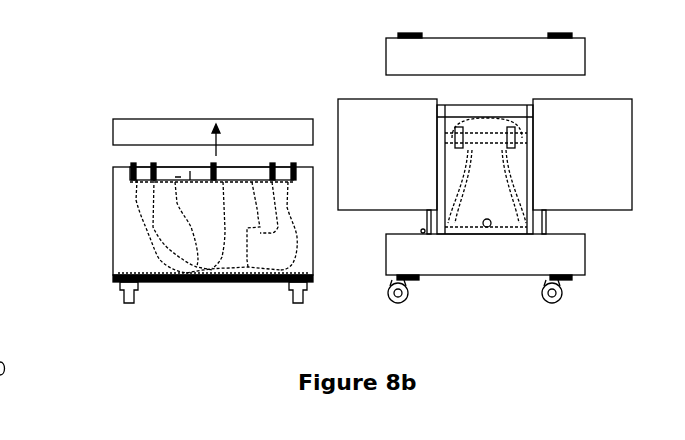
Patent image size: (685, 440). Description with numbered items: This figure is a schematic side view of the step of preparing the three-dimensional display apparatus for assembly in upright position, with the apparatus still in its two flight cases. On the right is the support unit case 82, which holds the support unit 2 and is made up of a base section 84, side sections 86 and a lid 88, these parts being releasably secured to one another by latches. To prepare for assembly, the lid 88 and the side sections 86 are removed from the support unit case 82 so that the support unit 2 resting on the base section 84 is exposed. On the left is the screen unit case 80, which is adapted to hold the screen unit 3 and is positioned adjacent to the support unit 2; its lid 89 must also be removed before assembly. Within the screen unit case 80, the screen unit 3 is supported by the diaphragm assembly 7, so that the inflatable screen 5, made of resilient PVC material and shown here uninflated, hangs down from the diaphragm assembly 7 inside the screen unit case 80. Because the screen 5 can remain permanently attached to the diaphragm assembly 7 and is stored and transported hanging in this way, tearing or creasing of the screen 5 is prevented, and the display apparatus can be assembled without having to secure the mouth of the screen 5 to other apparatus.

The support unit 2 is at (398, 225).
The screen unit 3 is at (310, 213).
The inflatable screen 5 is at (142, 225).
The diaphragm assembly 7 is at (137, 176).
The screen unit case 80 is at (160, 104).
The support unit case 82 is at (335, 68).
The base section 84 is at (578, 261).
The side sections 86 is at (485, 154).
The lid 88 is at (578, 62).
The lid 89 is at (120, 131).